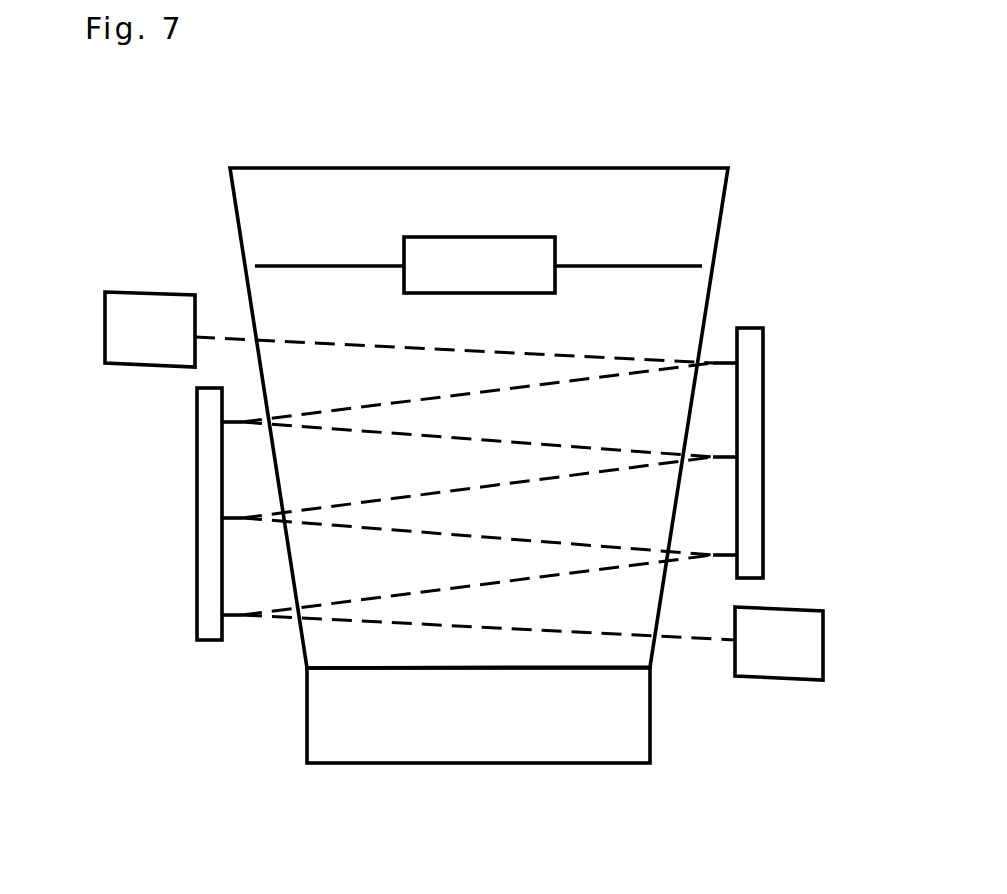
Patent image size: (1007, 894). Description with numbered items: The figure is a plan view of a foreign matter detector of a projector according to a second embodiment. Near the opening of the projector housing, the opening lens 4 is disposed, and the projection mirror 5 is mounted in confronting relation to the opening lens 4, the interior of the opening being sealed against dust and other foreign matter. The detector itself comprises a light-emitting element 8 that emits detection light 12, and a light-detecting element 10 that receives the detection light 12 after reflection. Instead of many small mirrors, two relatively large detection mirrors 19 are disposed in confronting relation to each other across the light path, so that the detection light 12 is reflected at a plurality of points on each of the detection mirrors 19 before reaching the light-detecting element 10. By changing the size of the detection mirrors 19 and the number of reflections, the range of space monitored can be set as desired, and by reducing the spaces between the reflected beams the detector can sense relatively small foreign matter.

The opening lens 4 is at (489, 237).
The projection mirror 5 is at (650, 735).
The light-emitting element 8 is at (103, 328).
The light-detecting element 10 is at (823, 637).
The detection light 12 is at (387, 623).
The detection mirrors 19 is at (197, 513).